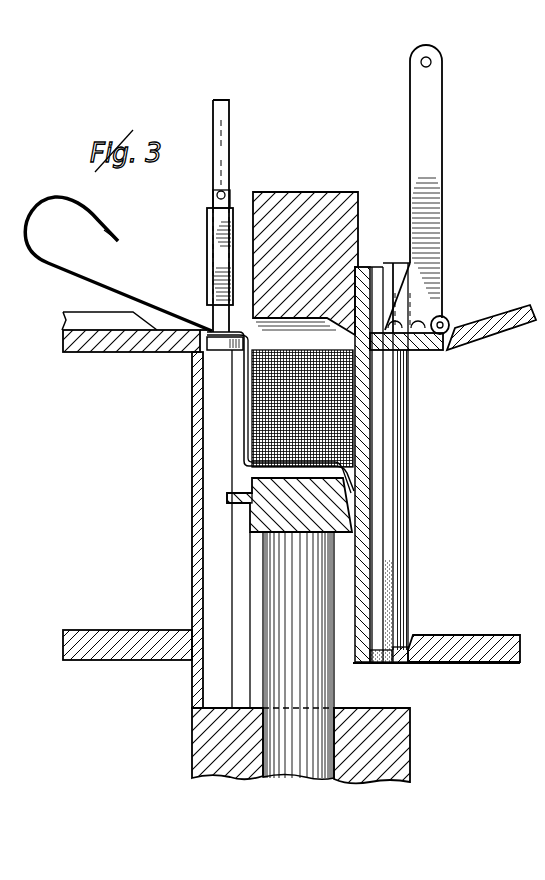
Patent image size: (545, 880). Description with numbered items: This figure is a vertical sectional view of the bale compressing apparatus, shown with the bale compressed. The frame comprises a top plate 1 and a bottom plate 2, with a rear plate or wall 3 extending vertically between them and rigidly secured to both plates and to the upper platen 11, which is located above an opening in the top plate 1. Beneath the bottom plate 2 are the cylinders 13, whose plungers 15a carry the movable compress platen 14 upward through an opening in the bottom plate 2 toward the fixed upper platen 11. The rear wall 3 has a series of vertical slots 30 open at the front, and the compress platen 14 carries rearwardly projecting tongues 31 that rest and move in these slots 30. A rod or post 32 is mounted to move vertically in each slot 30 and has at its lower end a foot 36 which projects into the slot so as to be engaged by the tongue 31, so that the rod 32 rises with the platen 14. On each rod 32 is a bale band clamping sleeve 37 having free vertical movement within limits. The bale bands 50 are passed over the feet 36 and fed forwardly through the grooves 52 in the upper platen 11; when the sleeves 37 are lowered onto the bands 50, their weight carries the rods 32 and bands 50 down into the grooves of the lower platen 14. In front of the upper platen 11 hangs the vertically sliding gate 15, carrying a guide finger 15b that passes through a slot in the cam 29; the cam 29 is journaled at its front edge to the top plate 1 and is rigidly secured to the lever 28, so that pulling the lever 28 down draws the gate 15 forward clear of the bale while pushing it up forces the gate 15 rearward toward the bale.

The top plate 1 is at (115, 352).
The bottom plate 2 is at (436, 640).
The rear plate or wall 3 is at (192, 556).
The upper platen 11 is at (358, 233).
The cylinders 13 is at (362, 782).
The compress platen 14 is at (335, 508).
The vertically sliding gate 15 is at (370, 438).
The plungers 15a is at (298, 655).
The guide finger 15b is at (409, 400).
The lever 28 is at (441, 191).
The cam 29 is at (420, 352).
The vertical slots 30 is at (231, 529).
The tongues 31 is at (227, 498).
The rods or posts 32 is at (222, 149).
The foot 36 is at (210, 352).
The bale band clamping sleeve 37 is at (207, 232).
The bale bands 50 is at (420, 484).
The grooves 52 is at (302, 399).